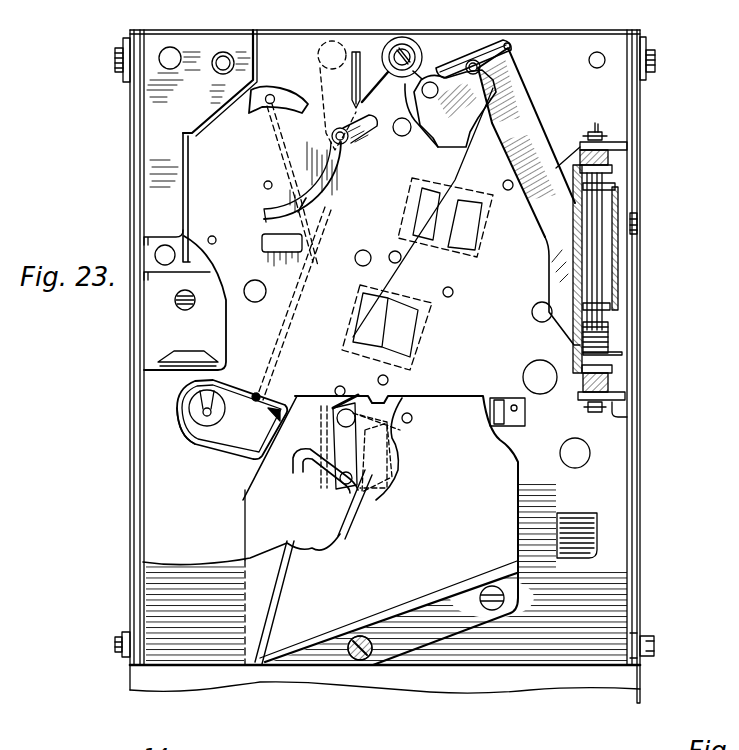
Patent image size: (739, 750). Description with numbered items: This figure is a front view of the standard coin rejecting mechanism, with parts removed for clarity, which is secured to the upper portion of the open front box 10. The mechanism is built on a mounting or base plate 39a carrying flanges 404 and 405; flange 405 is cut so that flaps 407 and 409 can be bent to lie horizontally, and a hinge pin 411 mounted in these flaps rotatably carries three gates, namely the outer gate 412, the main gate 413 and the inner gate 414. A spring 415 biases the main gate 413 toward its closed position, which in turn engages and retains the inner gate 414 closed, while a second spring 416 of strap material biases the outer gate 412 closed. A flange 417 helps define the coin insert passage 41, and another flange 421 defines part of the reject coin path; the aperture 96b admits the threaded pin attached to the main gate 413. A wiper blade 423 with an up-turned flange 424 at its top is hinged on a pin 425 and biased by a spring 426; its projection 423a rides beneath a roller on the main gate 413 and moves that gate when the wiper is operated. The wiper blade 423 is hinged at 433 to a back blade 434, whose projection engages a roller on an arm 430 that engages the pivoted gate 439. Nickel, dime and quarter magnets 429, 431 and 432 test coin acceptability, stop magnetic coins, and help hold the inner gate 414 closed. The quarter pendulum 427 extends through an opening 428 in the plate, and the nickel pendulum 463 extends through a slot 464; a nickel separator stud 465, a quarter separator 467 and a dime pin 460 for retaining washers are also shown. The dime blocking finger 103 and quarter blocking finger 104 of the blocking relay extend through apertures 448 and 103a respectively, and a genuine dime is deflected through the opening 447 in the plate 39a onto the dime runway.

The open front box 10 is at (320, 678).
The base plate 39a is at (158, 411).
The coin insert passage 41 is at (305, 41).
The aperture 96b is at (157, 248).
The dime blocking finger 103 is at (288, 308).
The aperture 103a is at (308, 96).
The quarter blocking finger 104 is at (268, 112).
The flange 404 is at (150, 503).
The flange 405 is at (619, 103).
The flap 407 is at (620, 138).
The flap 409 is at (614, 413).
The hinge pin 411 is at (595, 129).
The outer gate 412 is at (620, 268).
The main gate 413 is at (612, 381).
The inner gate 414 is at (560, 346).
The spring 415 is at (614, 336).
The second spring 416 is at (639, 226).
The flange 417 is at (256, 60).
The flange 421 is at (192, 191).
The wiper blade 423 is at (533, 118).
The projection 423a is at (414, 110).
The up-turned flange 424 is at (509, 48).
The pin 425 is at (416, 56).
The spring 426 is at (393, 41).
The quarter pendulum 427 is at (332, 134).
The opening 428 is at (331, 204).
The nickel magnet 429 is at (436, 186).
The arm 430 is at (337, 52).
The dime magnet 431 is at (398, 475).
The quarter magnet 432 is at (412, 323).
The hinge 433 is at (478, 88).
The back blade 434 is at (468, 154).
The gate 439 is at (210, 436).
The opening 447 is at (213, 290).
The aperture 448 is at (267, 431).
The dime pin 460 is at (220, 416).
The nickel pendulum 463 is at (338, 494).
The slot 464 is at (308, 470).
The nickel separator stud 465 is at (378, 503).
The quarter separator 467 is at (504, 428).